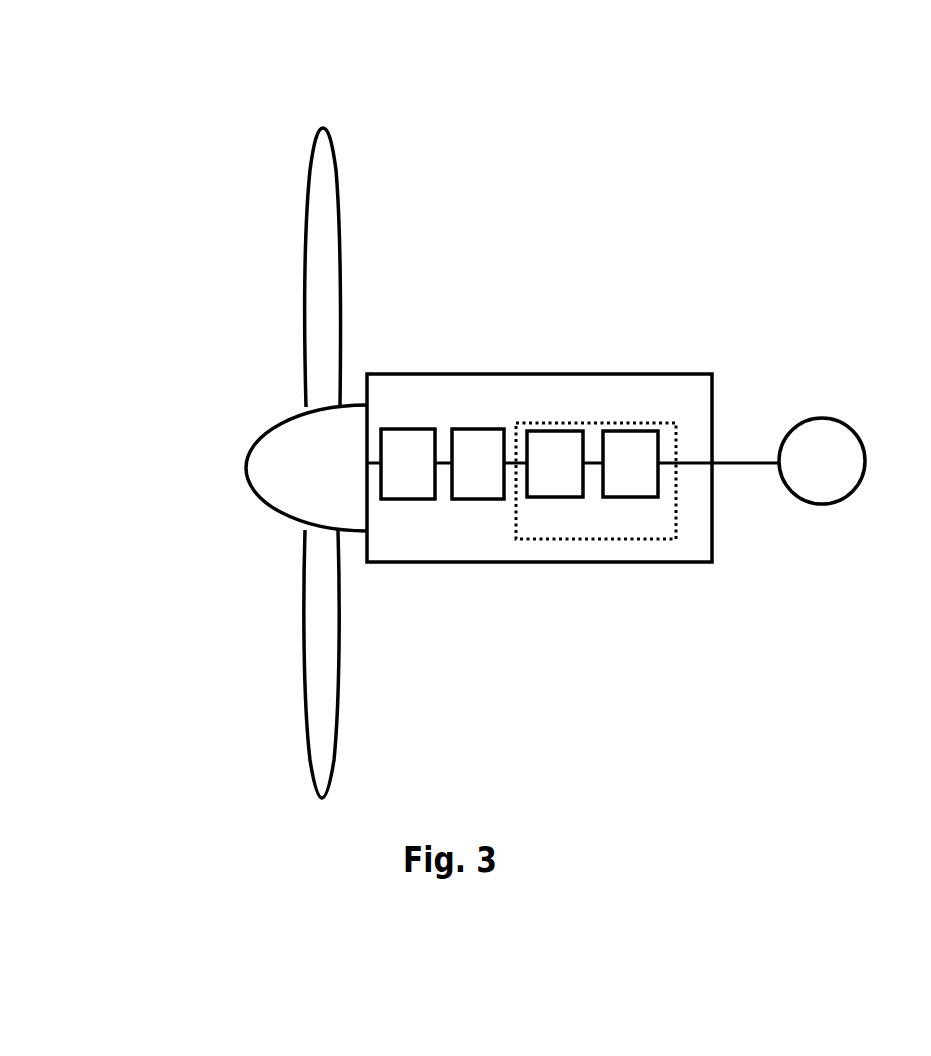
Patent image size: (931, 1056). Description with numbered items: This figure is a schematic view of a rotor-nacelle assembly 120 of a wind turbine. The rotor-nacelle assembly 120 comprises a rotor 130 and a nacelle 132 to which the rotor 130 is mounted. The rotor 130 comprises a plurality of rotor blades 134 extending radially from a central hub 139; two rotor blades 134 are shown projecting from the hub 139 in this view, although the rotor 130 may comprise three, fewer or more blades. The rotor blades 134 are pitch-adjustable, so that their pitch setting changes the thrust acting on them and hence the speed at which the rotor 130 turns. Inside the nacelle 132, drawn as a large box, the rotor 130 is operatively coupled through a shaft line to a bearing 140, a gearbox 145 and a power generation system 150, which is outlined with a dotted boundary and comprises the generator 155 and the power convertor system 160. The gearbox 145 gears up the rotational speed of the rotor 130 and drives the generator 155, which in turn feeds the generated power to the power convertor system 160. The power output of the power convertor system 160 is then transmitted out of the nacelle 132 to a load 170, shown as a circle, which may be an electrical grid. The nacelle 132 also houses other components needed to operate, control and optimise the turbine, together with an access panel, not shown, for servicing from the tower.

The rotor-nacelle assembly 120 is at (745, 121).
The rotor 130 is at (156, 247).
The nacelle 132 is at (573, 468).
The rotor blade 134 is at (322, 225).
The central hub 139 is at (327, 463).
The bearing 140 is at (408, 464).
The gearbox 145 is at (478, 464).
The power generation system 150 is at (596, 481).
The generator 155 is at (555, 464).
The power convertor system 160 is at (630, 464).
The load 170 is at (822, 461).